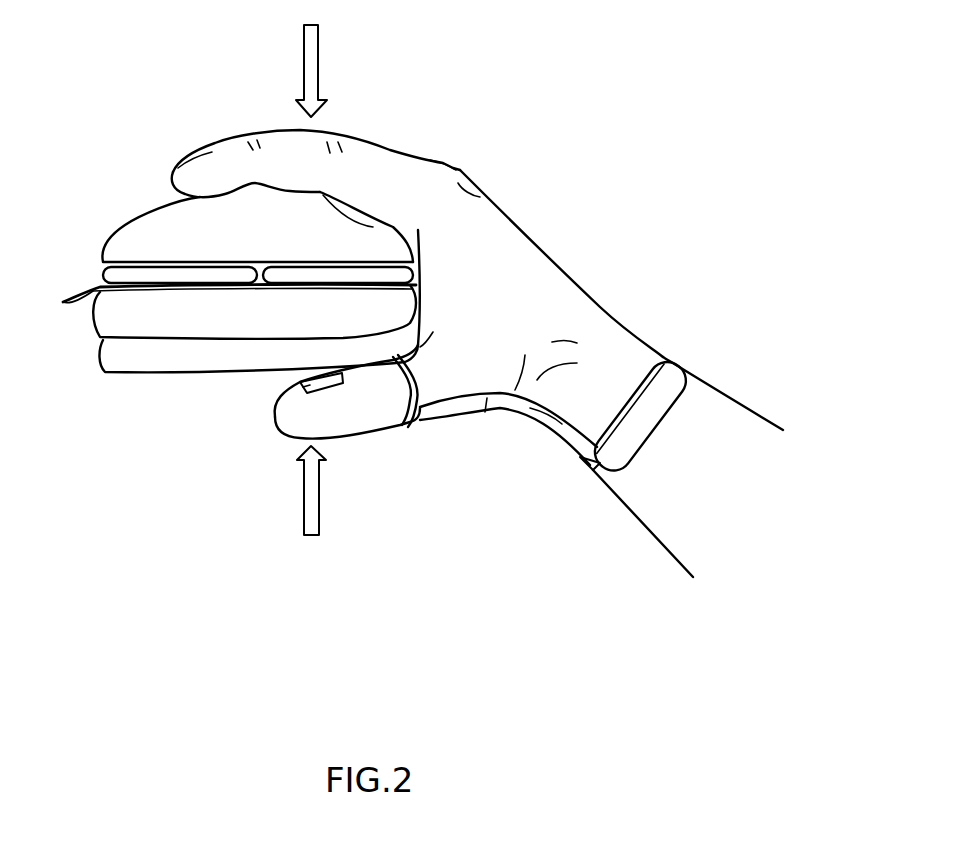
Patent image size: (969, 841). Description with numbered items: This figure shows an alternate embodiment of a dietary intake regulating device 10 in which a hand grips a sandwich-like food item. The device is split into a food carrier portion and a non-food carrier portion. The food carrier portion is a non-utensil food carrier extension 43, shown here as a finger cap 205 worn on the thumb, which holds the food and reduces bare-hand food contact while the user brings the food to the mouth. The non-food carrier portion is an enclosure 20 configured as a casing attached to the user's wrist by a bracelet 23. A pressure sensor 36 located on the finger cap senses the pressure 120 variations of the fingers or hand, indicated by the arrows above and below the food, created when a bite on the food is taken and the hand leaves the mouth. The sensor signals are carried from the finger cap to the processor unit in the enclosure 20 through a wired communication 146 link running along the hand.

The dietary intake regulating device 10 is at (468, 566).
The enclosure 20 is at (655, 417).
The bracelet 23 is at (588, 470).
The pressure sensor 36 is at (283, 395).
The non-utensil food carrier extension 43 is at (357, 402).
The pressure 120 is at (319, 55).
The wired communication 146 is at (487, 412).
The finger cap 205 is at (360, 405).